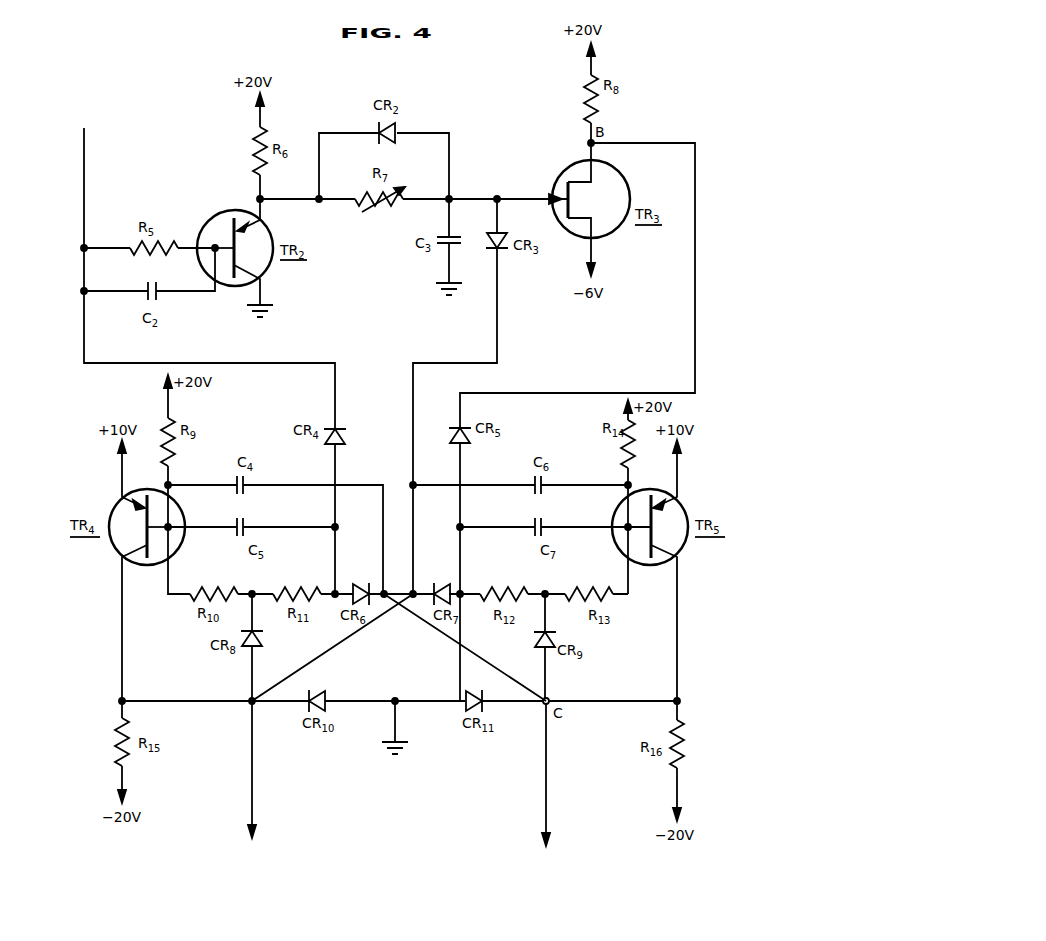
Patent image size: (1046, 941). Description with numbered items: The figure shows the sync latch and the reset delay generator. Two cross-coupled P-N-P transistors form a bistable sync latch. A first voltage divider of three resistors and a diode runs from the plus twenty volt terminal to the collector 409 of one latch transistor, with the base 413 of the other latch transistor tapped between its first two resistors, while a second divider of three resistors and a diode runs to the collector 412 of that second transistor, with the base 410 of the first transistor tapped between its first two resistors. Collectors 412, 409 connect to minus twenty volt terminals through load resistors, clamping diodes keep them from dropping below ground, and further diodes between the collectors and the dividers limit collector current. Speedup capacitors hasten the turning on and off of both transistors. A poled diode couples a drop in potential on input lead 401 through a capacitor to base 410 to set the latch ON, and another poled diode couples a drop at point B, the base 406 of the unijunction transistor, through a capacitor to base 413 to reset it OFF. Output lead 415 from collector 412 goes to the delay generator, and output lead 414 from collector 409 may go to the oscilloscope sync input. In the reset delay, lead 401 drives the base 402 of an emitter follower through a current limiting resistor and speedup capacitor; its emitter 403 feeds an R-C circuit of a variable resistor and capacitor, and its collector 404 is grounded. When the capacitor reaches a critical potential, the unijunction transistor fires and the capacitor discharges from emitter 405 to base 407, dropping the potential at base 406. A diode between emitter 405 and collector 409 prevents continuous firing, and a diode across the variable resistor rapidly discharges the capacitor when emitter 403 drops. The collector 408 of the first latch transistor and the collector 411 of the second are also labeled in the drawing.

The input lead 401 is at (84, 151).
The base of transistor TR2 402 is at (223, 243).
The emitter of transistor TR2 403 is at (252, 221).
The collector of transistor TR2 404 is at (246, 284).
The emitter of transistor TR3 405 is at (538, 196).
The base of transistor TR3 406 is at (588, 153).
The base of transistor TR3 407 is at (594, 258).
The collector of transistor TR4 408 is at (133, 499).
The collector of transistor TR4 409 is at (147, 554).
The base of transistor TR4 410 is at (170, 534).
The collector of transistor TR5 411 is at (668, 499).
The collector of transistor TR5 412 is at (668, 556).
The base of transistor TR5 413 is at (640, 533).
The output lead 414 is at (251, 737).
The output lead 415 is at (545, 750).